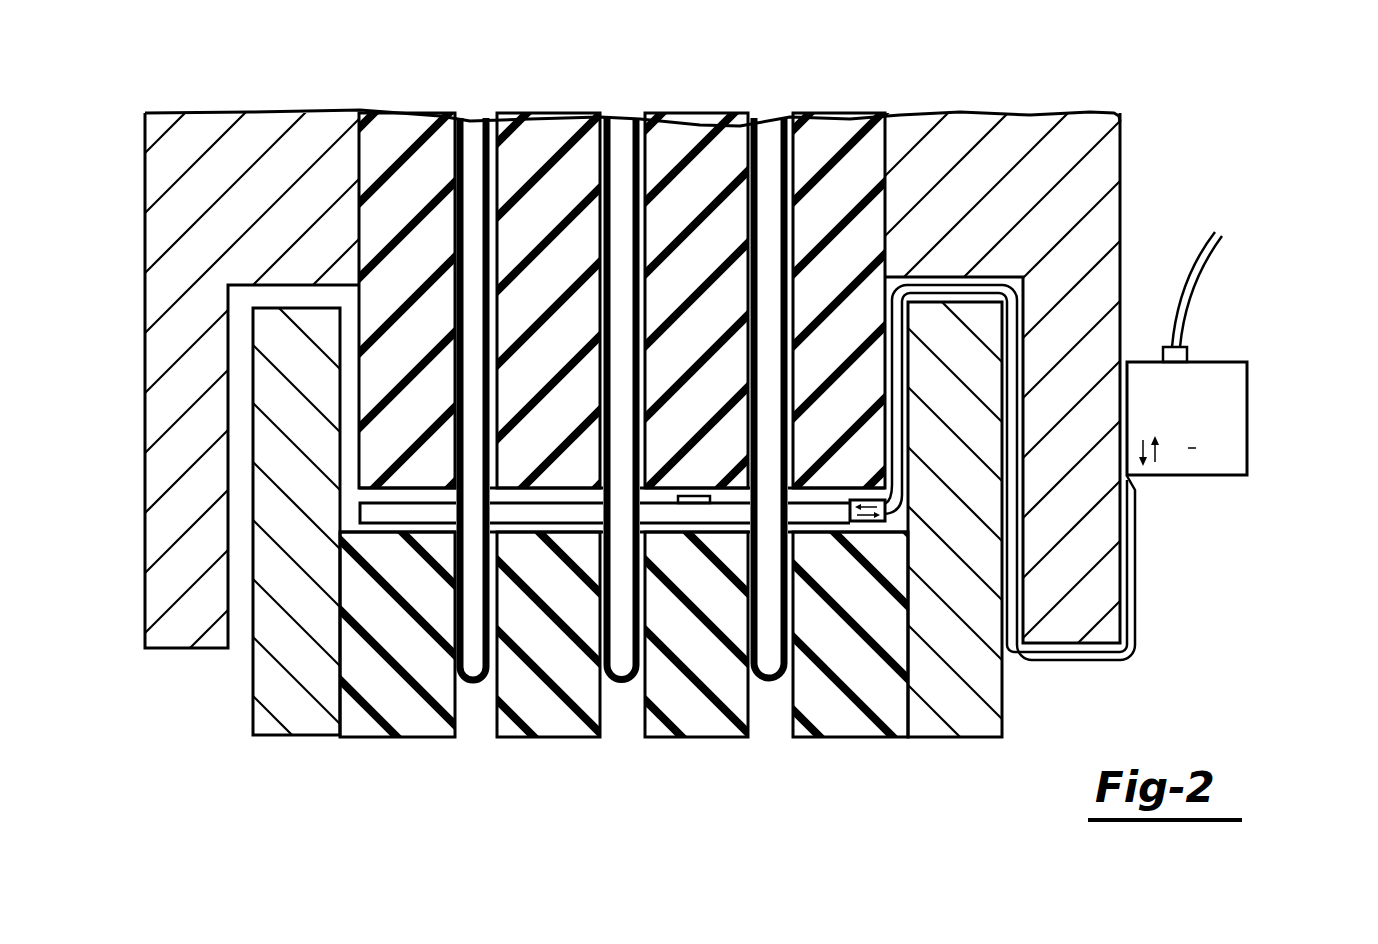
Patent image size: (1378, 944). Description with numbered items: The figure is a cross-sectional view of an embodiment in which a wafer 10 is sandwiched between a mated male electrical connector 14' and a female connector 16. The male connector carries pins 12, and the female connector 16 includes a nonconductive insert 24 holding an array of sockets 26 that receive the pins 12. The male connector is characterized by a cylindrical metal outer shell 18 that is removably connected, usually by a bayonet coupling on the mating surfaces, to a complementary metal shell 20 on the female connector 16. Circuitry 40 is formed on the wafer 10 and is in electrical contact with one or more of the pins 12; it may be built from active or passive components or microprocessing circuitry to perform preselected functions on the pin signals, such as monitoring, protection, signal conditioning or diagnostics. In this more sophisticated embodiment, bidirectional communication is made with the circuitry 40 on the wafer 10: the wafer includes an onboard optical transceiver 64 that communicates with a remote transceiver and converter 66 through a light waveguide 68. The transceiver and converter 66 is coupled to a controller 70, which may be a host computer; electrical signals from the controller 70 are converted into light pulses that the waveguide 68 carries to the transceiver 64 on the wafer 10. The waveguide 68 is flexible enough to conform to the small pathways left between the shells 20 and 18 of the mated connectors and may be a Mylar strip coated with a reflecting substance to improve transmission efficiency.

The wafer 10 is at (405, 513).
The pins 12 is at (613, 125).
The male electrical connector 14' is at (632, 84).
The female connector 16 is at (964, 745).
The cylindrical metal outer shell 18 is at (1110, 155).
The metal shell 20 is at (260, 672).
The nonconductive insert 24 is at (849, 726).
The sockets 26 is at (610, 714).
The circuitry 40 is at (697, 503).
The onboard optical transceiver 64 is at (1041, 631).
The transceiver and converter 66 is at (1232, 408).
The light waveguide 68 is at (1084, 481).
The controller 70 is at (1235, 258).